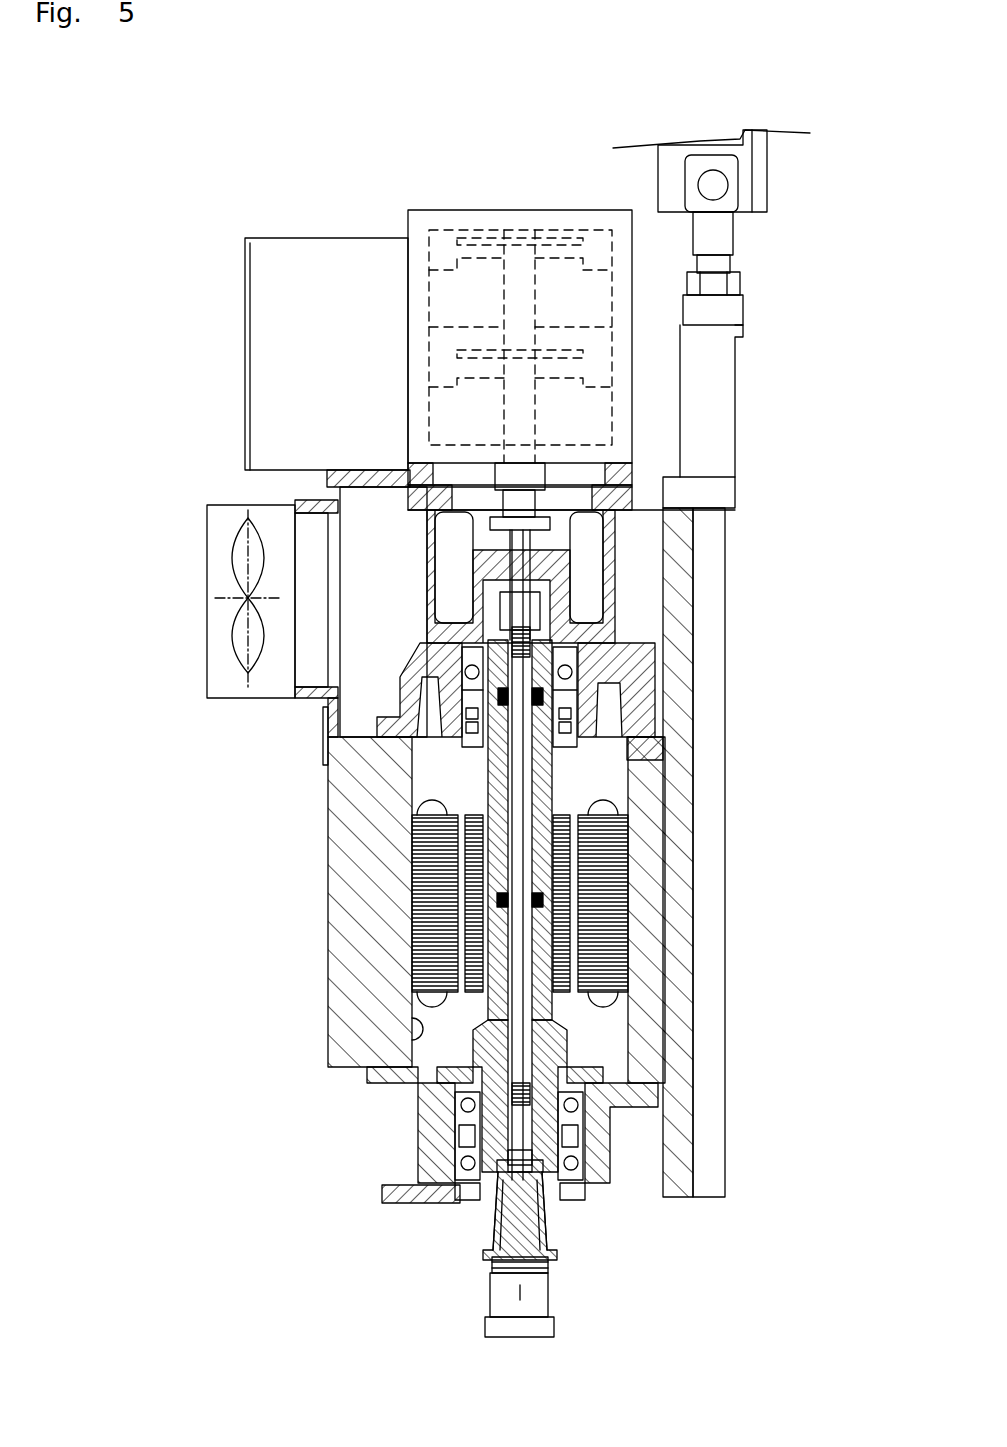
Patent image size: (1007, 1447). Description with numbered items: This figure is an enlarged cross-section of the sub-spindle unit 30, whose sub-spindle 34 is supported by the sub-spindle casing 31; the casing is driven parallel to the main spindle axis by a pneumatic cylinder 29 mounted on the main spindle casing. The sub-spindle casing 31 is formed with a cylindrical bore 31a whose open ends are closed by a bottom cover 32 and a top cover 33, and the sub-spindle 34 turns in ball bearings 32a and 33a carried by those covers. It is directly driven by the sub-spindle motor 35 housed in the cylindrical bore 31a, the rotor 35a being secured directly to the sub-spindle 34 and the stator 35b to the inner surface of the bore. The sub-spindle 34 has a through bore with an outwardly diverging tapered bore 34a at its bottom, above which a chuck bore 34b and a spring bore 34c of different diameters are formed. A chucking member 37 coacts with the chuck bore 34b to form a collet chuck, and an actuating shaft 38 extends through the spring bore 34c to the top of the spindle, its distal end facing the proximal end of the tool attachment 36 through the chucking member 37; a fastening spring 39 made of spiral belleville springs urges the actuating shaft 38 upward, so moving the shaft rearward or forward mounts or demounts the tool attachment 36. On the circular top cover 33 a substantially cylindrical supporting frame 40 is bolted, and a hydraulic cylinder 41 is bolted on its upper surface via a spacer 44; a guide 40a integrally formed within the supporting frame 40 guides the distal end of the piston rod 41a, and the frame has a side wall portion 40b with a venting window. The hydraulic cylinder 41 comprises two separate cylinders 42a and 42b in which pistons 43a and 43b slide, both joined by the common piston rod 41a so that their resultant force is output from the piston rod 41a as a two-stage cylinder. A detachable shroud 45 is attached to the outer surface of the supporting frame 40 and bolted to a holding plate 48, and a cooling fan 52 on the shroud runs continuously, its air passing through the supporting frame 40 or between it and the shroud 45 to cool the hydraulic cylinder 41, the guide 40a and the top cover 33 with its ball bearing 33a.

The pneumatic cylinder 29 is at (760, 190).
The sub-spindle unit 30 is at (266, 194).
The sub-spindle casing 31 is at (345, 935).
The cylindrical bore 31a is at (424, 1020).
The bottom cover 32 is at (378, 1088).
The ball bearing 32a is at (583, 1110).
The top cover 33 is at (425, 648).
The ball bearing 33a is at (460, 665).
The sub-spindle 34 is at (485, 1242).
The tapered bore 34a is at (543, 1232).
The chuck bore 34b is at (573, 1210).
The spring bore 34c is at (543, 770).
The sub-spindle motor 35 is at (320, 842).
The rotor 35a is at (412, 810).
The stator 35b is at (420, 842).
The tool attachment 36 is at (545, 1300).
The chucking member 37 is at (496, 1190).
The actuating shaft 38 is at (513, 787).
The fastening spring 39 is at (495, 756).
The supporting frame 40 is at (610, 592).
The guide 40a is at (575, 565).
The housing side wall 40b is at (428, 553).
The hydraulic cylinder 41 is at (487, 197).
The piston rod 41a is at (530, 410).
The cylinder 42a is at (437, 291).
The cylinder 42b is at (437, 400).
The piston 43a is at (600, 265).
The piston 43b is at (590, 352).
The spacer 44 is at (423, 478).
The detachable shroud 45 is at (310, 698).
The holding plate 48 is at (323, 750).
The cooling fan 52 is at (232, 505).